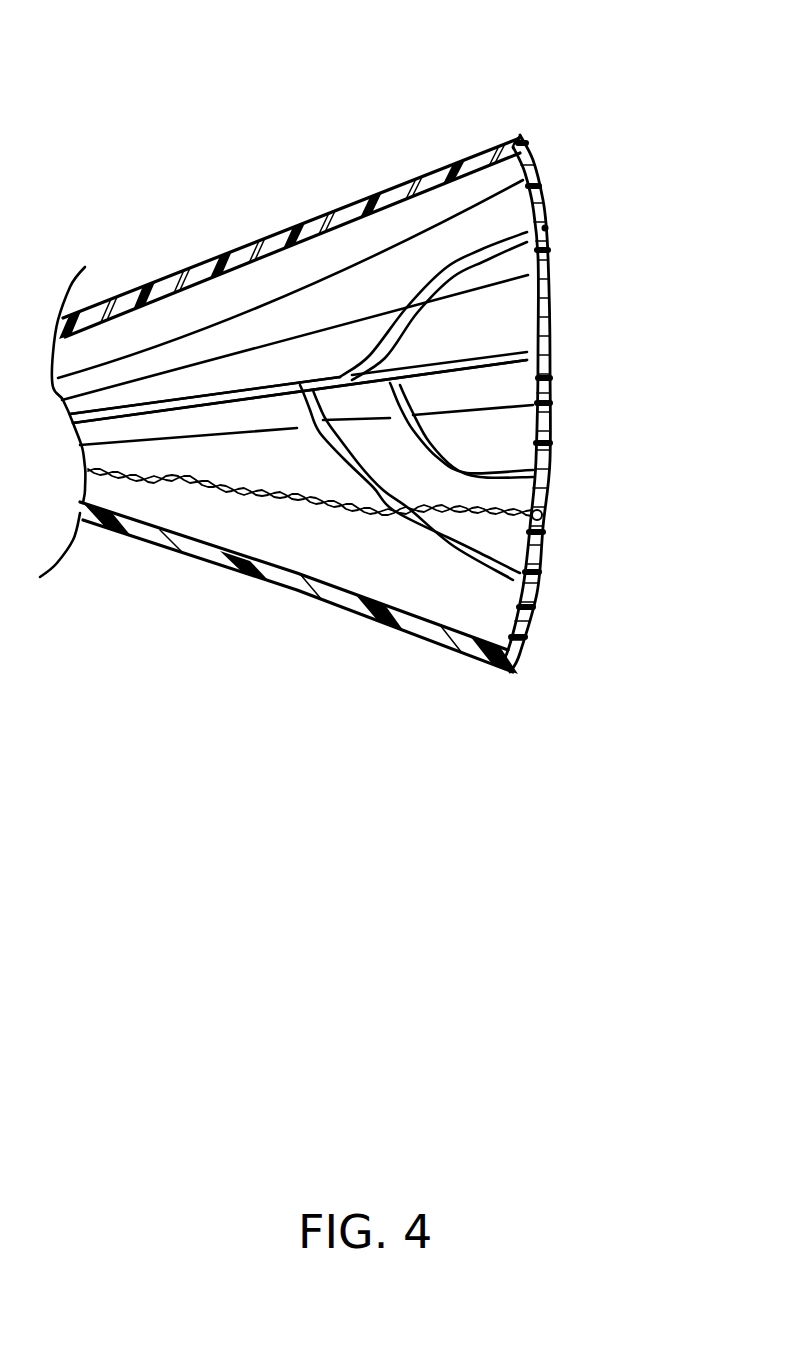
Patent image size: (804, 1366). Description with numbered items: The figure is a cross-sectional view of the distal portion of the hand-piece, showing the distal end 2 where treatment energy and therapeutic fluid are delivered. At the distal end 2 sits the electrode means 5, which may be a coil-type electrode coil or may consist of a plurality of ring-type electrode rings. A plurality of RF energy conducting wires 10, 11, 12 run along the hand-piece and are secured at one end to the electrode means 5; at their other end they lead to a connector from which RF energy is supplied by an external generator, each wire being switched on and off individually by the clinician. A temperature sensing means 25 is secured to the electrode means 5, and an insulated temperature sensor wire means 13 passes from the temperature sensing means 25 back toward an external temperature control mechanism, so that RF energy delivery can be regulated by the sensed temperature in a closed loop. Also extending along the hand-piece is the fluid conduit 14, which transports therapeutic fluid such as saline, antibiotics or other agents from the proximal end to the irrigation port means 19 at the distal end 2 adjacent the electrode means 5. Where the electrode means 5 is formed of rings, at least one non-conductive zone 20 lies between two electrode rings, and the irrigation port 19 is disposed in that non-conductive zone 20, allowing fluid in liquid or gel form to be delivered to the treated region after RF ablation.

The distal end 2 is at (334, 169).
The electrode means 5 is at (574, 365).
The RF energy conducting wire 10 is at (290, 219).
The RF energy conducting wire 11 is at (295, 234).
The RF energy conducting wire 12 is at (350, 522).
The insulated temperature sensor wire means 13 is at (381, 570).
The fluid conduit 14 is at (298, 534).
The irrigation port means 19 is at (498, 265).
The non-conductive zone 20 is at (569, 404).
The temperature sensing means 25 is at (372, 494).